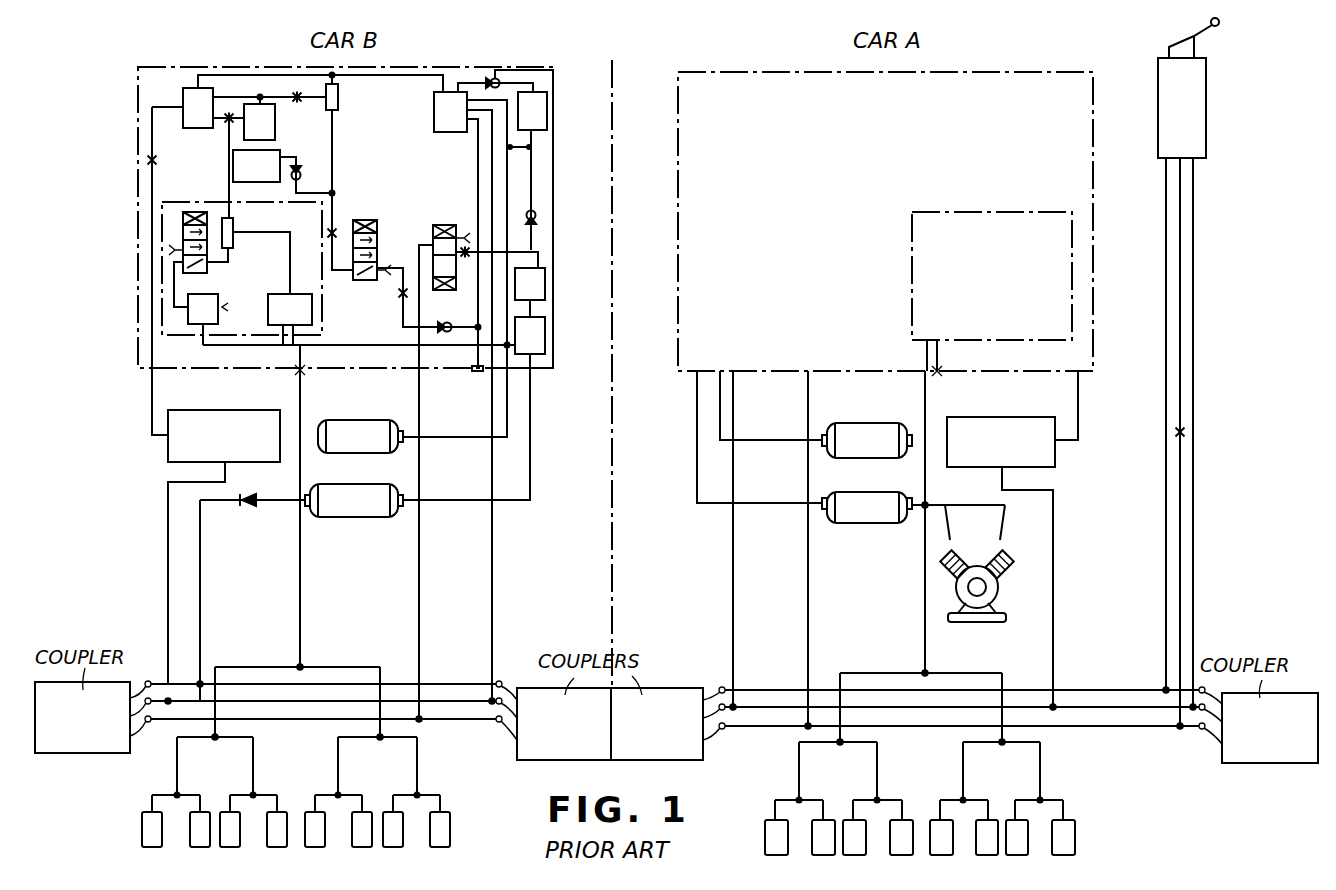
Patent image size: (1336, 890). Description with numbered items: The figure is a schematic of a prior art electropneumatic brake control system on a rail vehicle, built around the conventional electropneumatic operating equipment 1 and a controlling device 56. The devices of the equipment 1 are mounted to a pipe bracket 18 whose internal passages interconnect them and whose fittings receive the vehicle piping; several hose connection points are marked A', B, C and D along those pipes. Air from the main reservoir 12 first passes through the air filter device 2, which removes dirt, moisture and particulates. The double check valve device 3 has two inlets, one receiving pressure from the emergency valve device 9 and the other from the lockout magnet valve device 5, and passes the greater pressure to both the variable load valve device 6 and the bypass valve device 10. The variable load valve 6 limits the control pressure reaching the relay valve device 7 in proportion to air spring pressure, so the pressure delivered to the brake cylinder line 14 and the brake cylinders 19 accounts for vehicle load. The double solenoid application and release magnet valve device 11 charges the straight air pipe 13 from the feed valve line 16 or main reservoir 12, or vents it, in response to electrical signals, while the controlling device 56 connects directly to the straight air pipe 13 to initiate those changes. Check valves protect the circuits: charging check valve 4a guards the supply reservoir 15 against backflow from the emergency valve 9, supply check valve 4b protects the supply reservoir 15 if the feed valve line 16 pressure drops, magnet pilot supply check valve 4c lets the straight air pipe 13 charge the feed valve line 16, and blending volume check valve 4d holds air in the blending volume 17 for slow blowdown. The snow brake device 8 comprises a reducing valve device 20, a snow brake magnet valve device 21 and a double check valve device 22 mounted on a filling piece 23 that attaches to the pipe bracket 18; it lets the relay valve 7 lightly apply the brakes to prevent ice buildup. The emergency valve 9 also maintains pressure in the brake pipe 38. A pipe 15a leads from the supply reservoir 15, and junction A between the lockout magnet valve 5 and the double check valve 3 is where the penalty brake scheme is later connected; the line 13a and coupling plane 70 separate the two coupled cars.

The electropneumatic operating equipment 1 is at (447, 60).
The air filter device 2 is at (545, 334).
The double check valve device 3 is at (338, 100).
The charging check valve 4a is at (500, 78).
The supply check valve 4b is at (538, 217).
The magnet pilot supply check valve 4c is at (447, 323).
The blending volume check valve 4d is at (303, 175).
The lockout magnet valve device 5 is at (378, 224).
The variable load valve device 6 is at (195, 88).
The J-1 relay valve device 7 is at (278, 326).
The snow brake device 8 is at (160, 300).
The emergency valve device 9 is at (434, 110).
The bypass valve device 10 is at (260, 104).
The N-4-E magnet valve device 11 is at (440, 223).
The main reservoir 12 is at (358, 519).
The straight air pipe 13 is at (420, 468).
The brake pipe branch 13a is at (1179, 556).
The brake cylinder line 14 is at (302, 392).
The supply reservoir 15 is at (362, 428).
The pipe 15a is at (368, 345).
The feed valve line 16 is at (477, 353).
The blending volume 17 is at (240, 165).
The pipe bracket 18 is at (139, 92).
The brake cylinders 19 is at (295, 797).
The N-Type reducing valve device 20 is at (188, 322).
The snow brake magnet valve device 21 is at (183, 216).
The double check valve device 22 is at (232, 238).
The filling piece 23 is at (172, 315).
The brake pipe 38 is at (493, 548).
The controlling device 56 is at (1157, 48).
The car coupling plane 70 is at (632, 34).
The junction A is at (345, 216).
The connection point A prime A' is at (298, 118).
The connection point B is at (226, 122).
The connection point C is at (147, 160).
The connection point D is at (1188, 432).